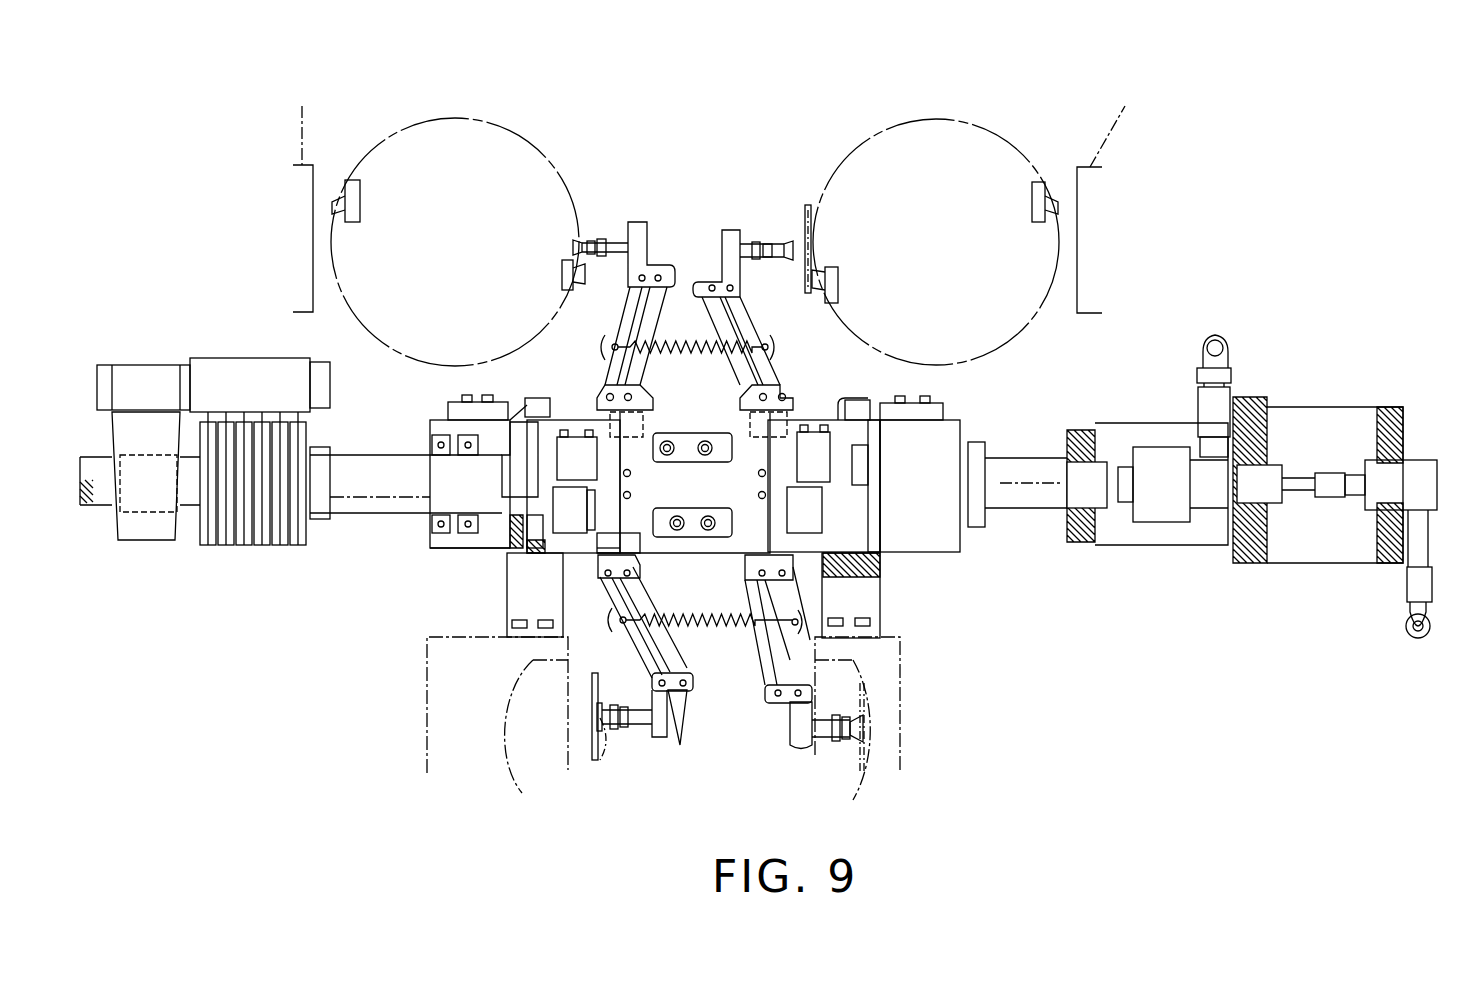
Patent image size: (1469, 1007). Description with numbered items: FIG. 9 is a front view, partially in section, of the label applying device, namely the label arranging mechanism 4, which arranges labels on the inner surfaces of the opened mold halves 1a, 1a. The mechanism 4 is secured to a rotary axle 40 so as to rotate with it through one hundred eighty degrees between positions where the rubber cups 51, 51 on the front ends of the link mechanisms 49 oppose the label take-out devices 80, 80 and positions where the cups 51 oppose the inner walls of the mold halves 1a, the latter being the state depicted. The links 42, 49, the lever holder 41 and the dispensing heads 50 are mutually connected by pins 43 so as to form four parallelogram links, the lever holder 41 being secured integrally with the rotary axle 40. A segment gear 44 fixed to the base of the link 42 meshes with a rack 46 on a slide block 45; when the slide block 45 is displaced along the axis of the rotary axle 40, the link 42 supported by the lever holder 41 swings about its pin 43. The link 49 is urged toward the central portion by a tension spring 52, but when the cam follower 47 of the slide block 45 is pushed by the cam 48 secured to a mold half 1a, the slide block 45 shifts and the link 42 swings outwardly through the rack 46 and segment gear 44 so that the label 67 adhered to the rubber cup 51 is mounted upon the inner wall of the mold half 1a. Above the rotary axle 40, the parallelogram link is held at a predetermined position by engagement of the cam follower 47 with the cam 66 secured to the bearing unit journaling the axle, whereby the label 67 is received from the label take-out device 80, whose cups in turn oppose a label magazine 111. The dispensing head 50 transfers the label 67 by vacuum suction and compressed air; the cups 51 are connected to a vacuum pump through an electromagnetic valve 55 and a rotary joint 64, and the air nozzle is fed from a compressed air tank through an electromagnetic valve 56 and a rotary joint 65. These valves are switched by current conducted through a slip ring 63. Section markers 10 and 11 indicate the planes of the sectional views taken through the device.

The mold half 1a is at (435, 745).
The label arranging mechanism 4 is at (977, 565).
The section line 10 is at (525, 400).
The section line 11 is at (733, 420).
The rotary axle 40 is at (367, 507).
The lever holder 41 is at (530, 556).
The link 42 is at (680, 658).
The pin 43 is at (633, 583).
The segment gear 44 is at (617, 583).
The slide block 45 is at (595, 552).
The rack 46 is at (597, 553).
The cam follower 47 is at (550, 408).
The cam 48 is at (510, 550).
The link 49 is at (650, 657).
The dispensing head 50 is at (653, 735).
The rubber cup 51 is at (598, 757).
The tension spring 52 is at (738, 628).
The electromagnetic valve 55 is at (570, 500).
The electromagnetic valve 56 is at (575, 450).
The slip ring 63 is at (247, 545).
The rotary joint 64 is at (1200, 460).
The rotary joint 65 is at (1420, 465).
The cam 66 is at (520, 402).
The label 67 is at (805, 207).
The label take-out device 80 is at (470, 100).
The label magazine 111 is at (719, 198).